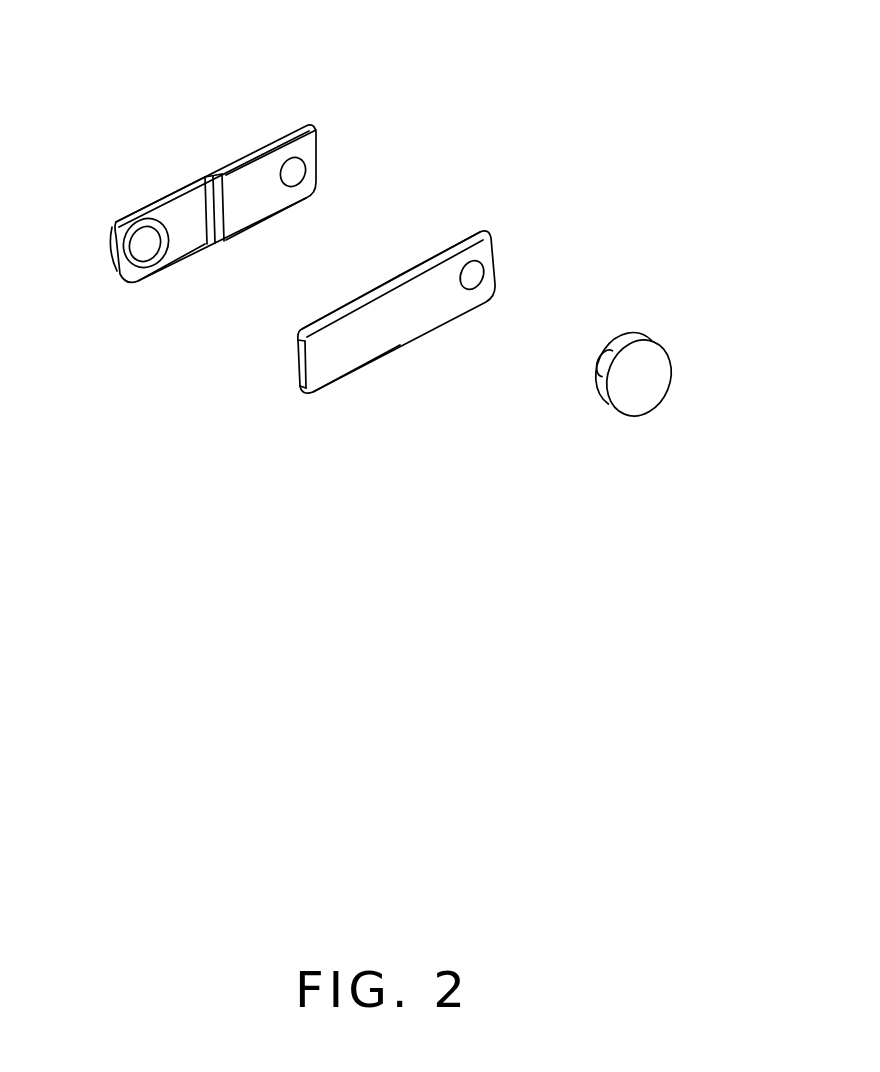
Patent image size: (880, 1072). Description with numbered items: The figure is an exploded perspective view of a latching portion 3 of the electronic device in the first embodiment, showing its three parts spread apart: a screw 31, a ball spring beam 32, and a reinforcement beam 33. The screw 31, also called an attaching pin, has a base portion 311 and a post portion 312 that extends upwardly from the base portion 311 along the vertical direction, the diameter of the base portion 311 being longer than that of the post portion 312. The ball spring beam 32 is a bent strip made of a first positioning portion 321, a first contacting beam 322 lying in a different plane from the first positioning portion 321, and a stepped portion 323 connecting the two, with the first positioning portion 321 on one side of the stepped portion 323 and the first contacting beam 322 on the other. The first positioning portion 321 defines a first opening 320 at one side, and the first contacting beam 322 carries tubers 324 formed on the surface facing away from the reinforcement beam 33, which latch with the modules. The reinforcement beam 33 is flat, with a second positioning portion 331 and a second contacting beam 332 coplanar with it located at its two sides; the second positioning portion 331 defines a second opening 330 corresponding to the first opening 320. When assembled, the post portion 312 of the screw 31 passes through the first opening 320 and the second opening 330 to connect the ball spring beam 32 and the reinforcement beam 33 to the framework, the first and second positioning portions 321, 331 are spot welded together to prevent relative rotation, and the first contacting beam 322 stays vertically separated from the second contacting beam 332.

The latching portion 3 is at (726, 192).
The screw 31 is at (730, 265).
The base portion 311 is at (657, 362).
The post portion 312 is at (613, 348).
The ball spring beam 32 is at (334, 121).
The first opening 320 is at (290, 167).
The first positioning portion 321 is at (255, 193).
The first contacting beam 322 is at (177, 210).
The stepped portion 323 is at (217, 203).
The tubers 324 is at (110, 230).
The reinforcement beam 33 is at (503, 207).
The second opening 330 is at (481, 270).
The second positioning portion 331 is at (437, 282).
The second contacting beam 332 is at (332, 353).